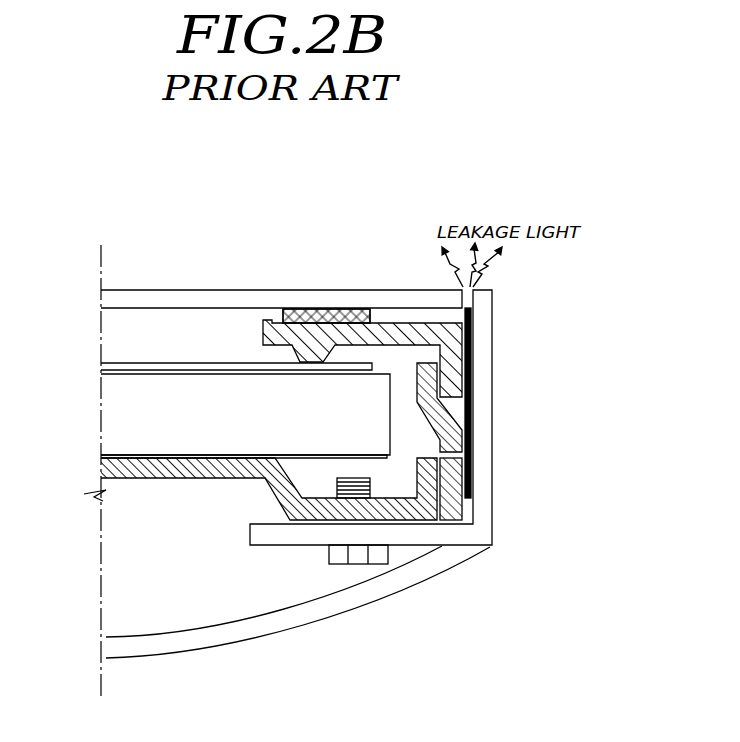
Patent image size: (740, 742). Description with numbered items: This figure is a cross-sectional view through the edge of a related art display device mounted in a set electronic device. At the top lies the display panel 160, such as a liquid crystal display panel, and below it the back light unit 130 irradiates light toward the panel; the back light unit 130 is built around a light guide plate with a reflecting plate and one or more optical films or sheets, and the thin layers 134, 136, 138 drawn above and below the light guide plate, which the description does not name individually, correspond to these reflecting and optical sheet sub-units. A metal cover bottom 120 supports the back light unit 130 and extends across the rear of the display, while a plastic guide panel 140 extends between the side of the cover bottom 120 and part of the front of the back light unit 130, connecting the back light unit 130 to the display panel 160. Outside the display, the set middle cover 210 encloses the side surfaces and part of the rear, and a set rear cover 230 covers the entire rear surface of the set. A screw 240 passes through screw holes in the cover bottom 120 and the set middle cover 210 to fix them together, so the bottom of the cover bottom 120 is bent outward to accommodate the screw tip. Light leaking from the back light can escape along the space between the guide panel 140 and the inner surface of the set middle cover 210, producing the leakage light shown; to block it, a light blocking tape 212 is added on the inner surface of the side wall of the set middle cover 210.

The cover bottom 120 is at (100, 470).
The back light unit 130 is at (367, 428).
The reflective sheet 134 is at (100, 455).
The optical sheet 136 is at (100, 395).
The optical sheet 138 is at (100, 368).
The guide panel 140 is at (380, 320).
The display panel 160 is at (284, 300).
The set middle cover 210 is at (488, 322).
The light blocking tape 212 is at (473, 363).
The set rear cover 230 is at (428, 571).
The screw 240 is at (343, 565).